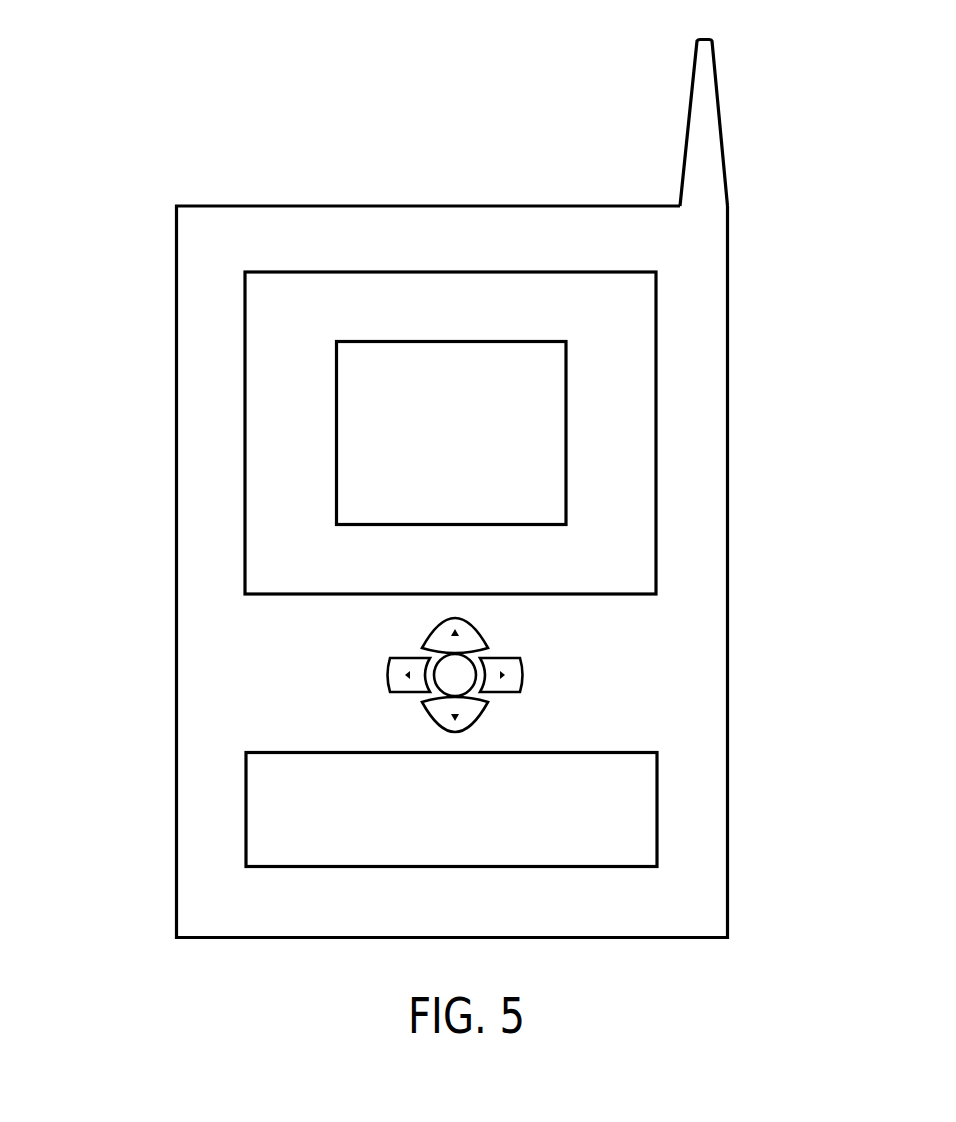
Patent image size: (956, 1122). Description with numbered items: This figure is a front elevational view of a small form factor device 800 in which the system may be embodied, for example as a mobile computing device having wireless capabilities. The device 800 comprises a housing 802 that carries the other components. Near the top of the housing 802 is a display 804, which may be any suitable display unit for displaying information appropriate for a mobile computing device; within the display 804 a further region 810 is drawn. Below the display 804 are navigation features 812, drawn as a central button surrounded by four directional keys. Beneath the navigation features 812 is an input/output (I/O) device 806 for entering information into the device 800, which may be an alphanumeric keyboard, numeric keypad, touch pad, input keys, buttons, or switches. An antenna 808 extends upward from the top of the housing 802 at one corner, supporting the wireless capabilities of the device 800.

The device 800 is at (172, 138).
The housing 802 is at (176, 662).
The display 804 is at (656, 332).
The input/output (I/O) device 806 is at (657, 810).
The antenna 808 is at (688, 121).
The display region 810 is at (452, 341).
The navigation features 812 is at (562, 676).